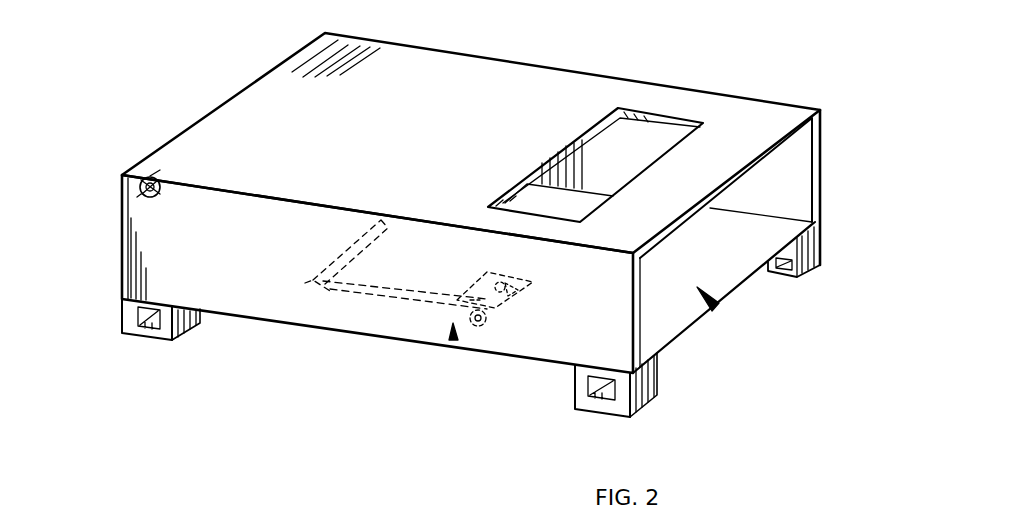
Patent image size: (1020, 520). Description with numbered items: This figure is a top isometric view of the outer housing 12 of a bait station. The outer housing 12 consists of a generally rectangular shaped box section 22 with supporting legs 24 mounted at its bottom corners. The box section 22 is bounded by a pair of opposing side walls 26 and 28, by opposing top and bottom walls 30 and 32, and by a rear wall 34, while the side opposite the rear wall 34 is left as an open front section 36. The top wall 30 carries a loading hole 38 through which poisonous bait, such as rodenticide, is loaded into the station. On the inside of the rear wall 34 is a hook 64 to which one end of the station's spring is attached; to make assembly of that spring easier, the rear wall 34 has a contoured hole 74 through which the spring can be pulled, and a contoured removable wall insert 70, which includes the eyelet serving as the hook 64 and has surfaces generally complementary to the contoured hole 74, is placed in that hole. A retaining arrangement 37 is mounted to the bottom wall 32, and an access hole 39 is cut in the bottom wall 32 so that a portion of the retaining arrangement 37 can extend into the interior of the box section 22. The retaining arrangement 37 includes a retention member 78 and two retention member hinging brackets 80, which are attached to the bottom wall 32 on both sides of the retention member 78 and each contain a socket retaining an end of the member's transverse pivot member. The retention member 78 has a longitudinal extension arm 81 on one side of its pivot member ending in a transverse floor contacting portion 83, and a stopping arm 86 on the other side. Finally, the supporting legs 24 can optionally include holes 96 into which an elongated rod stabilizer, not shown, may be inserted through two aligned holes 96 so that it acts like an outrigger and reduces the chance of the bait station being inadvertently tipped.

The outer housing 12 is at (453, 231).
The box section 22 is at (439, 226).
The supporting legs 24 is at (188, 335).
The side wall 26 is at (796, 195).
The side wall 28 is at (608, 319).
The top wall 30 is at (426, 112).
The bottom wall 32 is at (750, 249).
The rear wall 34 is at (121, 246).
The open front section 36 is at (716, 307).
The retaining arrangement 37 is at (453, 338).
The loading hole 38 is at (650, 130).
The access hole 39 is at (488, 264).
The hook 64 is at (167, 193).
The removable wall insert 70 is at (152, 176).
The contoured hole 74 is at (137, 197).
The retention member 78 is at (458, 291).
The retention member hinging brackets 80 is at (492, 325).
The longitudinal extension arm 81 is at (325, 293).
The transverse floor contacting portion 83 is at (350, 241).
The stopping arm 86 is at (510, 266).
The holes 96 is at (140, 312).